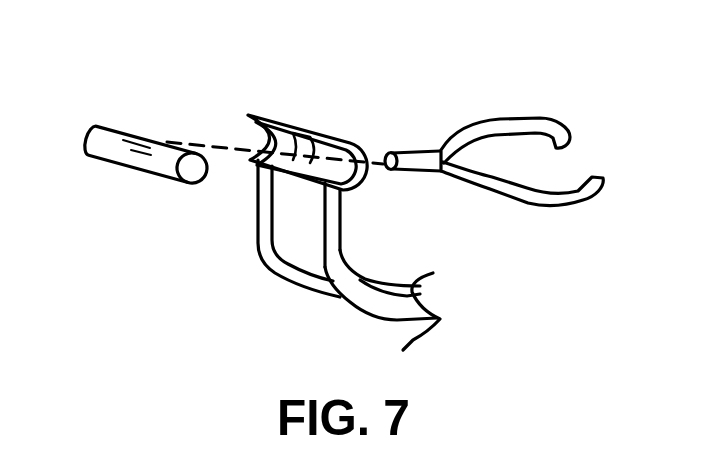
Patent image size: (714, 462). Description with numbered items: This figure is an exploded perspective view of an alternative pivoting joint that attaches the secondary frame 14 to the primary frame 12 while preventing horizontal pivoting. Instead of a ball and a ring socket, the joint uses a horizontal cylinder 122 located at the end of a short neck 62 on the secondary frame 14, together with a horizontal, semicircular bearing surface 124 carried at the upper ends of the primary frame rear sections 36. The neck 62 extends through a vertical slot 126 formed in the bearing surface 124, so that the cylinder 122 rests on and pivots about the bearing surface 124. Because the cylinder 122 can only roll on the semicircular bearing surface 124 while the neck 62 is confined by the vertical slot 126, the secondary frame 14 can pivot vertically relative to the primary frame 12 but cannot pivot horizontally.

The primary frame 12 is at (320, 255).
The secondary frame 14 is at (500, 108).
The primary frame rear section 36 is at (256, 222).
The neck 62 is at (412, 150).
The horizontal cylinder 122 is at (105, 160).
The semicircular bearing surface 124 is at (273, 113).
The vertical slot 126 is at (330, 137).